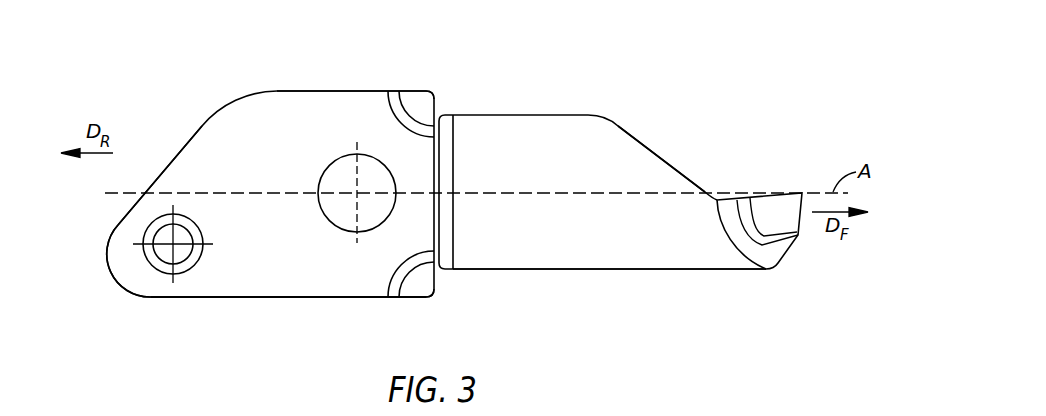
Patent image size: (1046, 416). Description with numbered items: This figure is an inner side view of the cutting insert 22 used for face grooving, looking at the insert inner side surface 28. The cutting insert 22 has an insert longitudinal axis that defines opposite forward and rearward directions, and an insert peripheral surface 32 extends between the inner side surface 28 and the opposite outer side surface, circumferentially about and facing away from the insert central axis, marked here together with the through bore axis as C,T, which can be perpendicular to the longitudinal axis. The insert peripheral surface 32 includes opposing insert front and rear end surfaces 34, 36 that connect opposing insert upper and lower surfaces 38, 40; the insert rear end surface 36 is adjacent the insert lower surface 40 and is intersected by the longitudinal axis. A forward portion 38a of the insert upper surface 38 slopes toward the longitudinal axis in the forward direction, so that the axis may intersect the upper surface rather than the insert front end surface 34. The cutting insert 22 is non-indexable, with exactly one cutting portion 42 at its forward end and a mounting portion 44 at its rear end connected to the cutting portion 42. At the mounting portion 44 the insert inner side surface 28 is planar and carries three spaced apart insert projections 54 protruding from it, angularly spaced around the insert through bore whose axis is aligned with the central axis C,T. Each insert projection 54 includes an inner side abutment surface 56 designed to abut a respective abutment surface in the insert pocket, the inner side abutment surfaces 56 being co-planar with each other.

The cutting insert 22 is at (704, 43).
The insert inner side surface 28 is at (243, 118).
The insert peripheral surface 32 is at (485, 115).
The insert front end surface 34 is at (795, 240).
The insert rear end surface 36 is at (176, 153).
The insert upper surface 38 is at (359, 91).
The forward portion of the insert upper surface 38a is at (658, 153).
The insert lower surface 40 is at (222, 298).
The cutting portion 42 is at (577, 309).
The mounting portion 44 is at (273, 335).
The insert projections 54 is at (449, 91).
The inner side abutment surface 56 is at (417, 102).
The insert central axis and through bore axis C,T is at (357, 193).